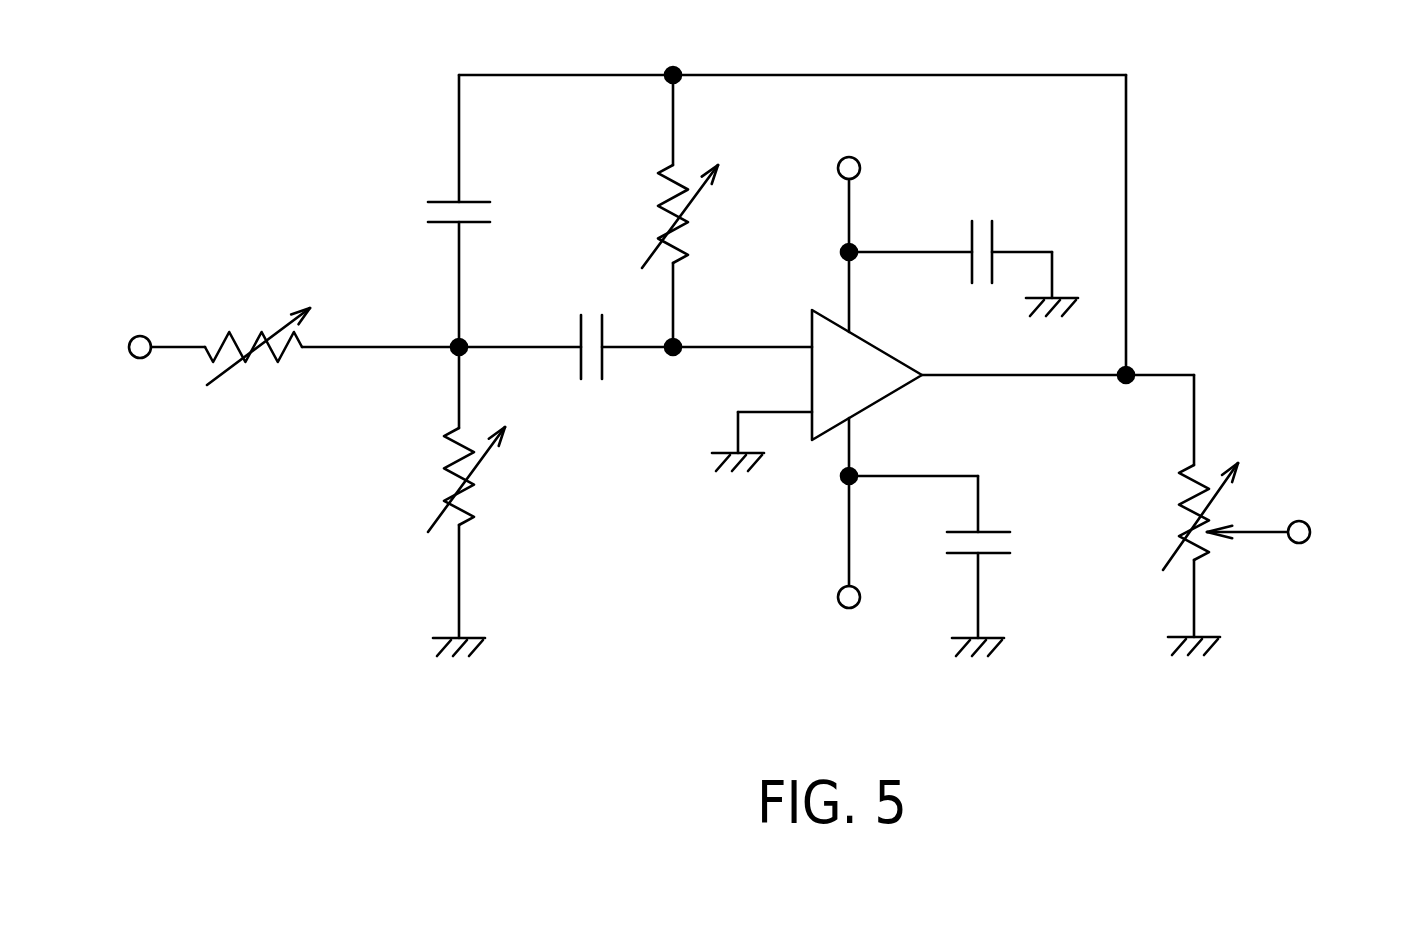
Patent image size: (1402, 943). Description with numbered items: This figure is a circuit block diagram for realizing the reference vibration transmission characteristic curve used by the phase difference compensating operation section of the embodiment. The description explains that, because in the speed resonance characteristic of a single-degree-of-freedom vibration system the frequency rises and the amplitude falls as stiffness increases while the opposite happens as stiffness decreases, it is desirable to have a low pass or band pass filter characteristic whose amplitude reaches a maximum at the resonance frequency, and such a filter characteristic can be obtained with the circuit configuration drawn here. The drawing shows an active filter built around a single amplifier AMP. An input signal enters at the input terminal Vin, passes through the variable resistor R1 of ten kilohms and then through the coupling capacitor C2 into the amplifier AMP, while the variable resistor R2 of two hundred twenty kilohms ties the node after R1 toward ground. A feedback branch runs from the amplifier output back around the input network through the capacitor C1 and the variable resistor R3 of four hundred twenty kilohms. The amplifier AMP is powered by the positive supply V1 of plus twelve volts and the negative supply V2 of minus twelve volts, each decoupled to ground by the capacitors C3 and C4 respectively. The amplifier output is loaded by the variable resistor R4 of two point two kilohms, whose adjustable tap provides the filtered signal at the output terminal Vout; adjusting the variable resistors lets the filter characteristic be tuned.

The variable resistor R1 (10K ohm) R1 is at (260, 325).
The variable resistor R2 (220K ohm) R2 is at (365, 479).
The variable resistor R3 (420K ohm) R3 is at (599, 201).
The variable resistor R4 (2.2K ohm) R4 is at (1279, 496).
The capacitor C1 is at (436, 203).
The capacitor C2 is at (599, 371).
The capacitor C3 is at (973, 271).
The capacitor C4 is at (952, 542).
The amplifier AMP is at (830, 357).
The positive supply voltage V1 (+12V) V1 is at (858, 146).
The negative supply voltage V2 (-12V) V2 is at (827, 625).
The input voltage terminal Vin is at (113, 346).
The output voltage terminal Vout is at (1297, 531).